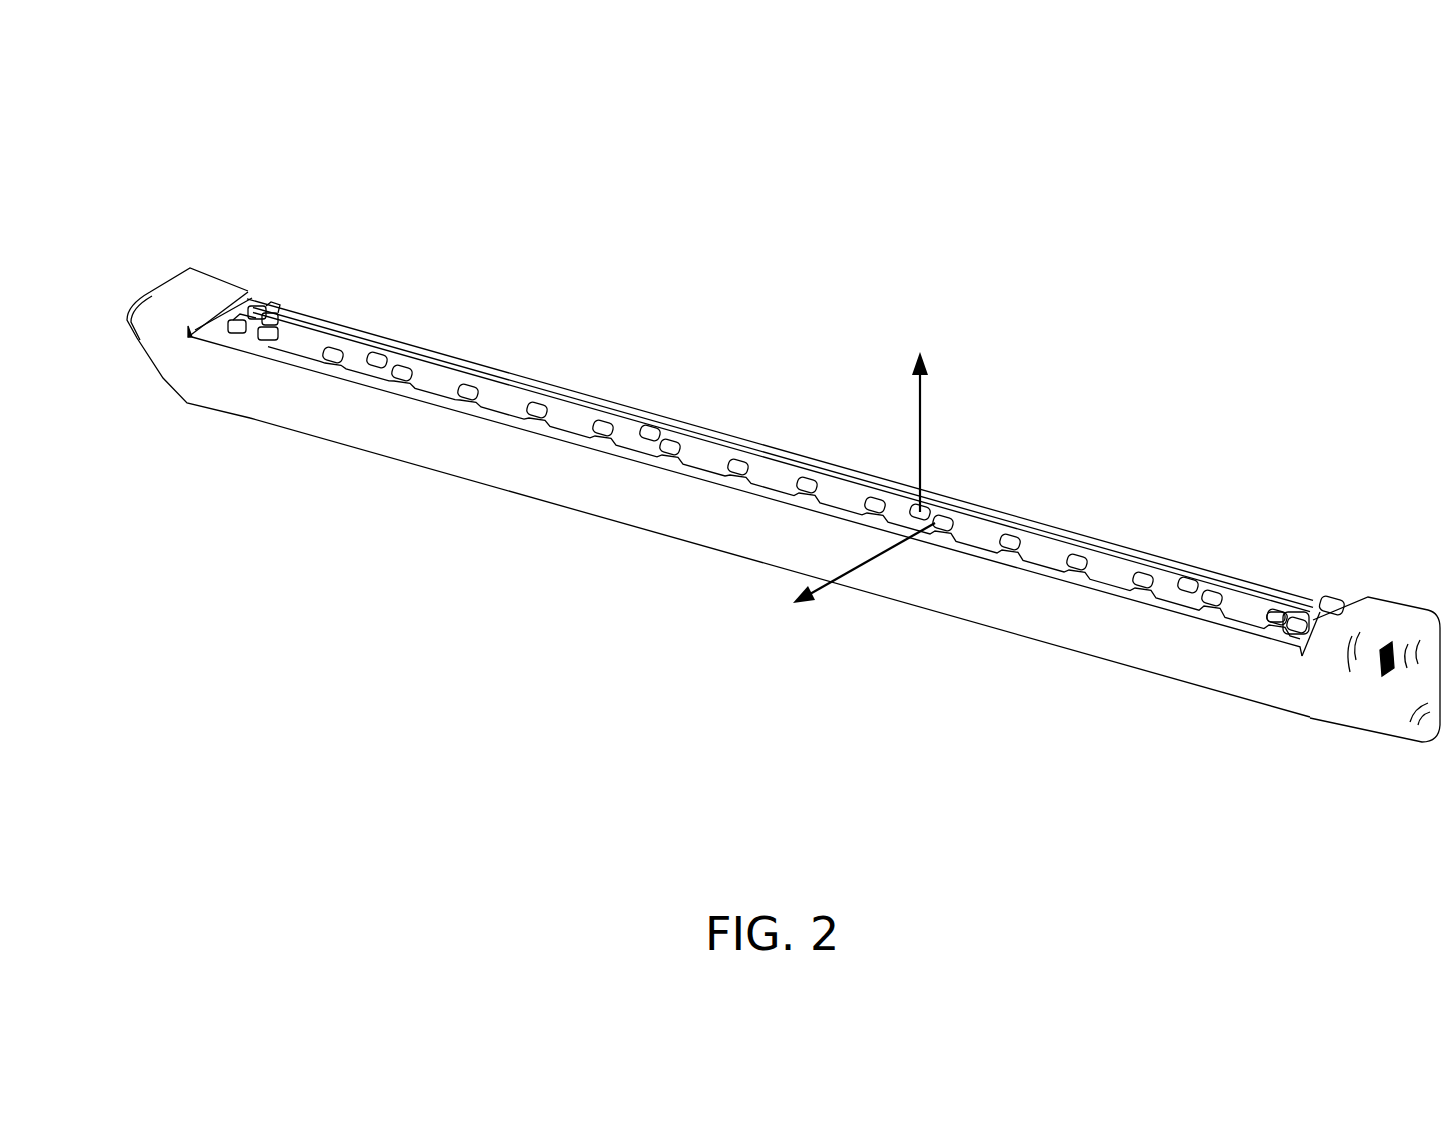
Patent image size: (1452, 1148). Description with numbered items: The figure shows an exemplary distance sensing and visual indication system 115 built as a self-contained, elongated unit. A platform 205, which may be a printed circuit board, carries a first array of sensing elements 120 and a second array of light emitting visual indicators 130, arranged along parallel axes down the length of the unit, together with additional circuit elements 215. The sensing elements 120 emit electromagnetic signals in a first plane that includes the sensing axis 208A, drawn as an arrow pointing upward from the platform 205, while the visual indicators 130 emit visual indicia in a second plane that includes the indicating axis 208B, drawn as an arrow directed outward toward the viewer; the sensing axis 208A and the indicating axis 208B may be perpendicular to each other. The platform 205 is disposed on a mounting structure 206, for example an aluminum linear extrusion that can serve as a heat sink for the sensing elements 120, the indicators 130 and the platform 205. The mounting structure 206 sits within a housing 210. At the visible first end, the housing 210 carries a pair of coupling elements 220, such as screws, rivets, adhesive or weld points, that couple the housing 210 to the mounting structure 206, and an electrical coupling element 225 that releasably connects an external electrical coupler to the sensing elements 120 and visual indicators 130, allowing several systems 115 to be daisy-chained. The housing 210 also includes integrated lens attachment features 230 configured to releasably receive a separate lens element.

The distance sensing and visual indication system 115 is at (229, 120).
The sensing elements 120 is at (373, 357).
The light emitting visual indicators 130 is at (473, 397).
The platform 205 is at (712, 447).
The mounting structure 206 is at (388, 390).
The sensing axis 208A is at (917, 423).
The indicating axis 208B is at (837, 574).
The housing 210 is at (626, 503).
The additional circuit elements 215 is at (1320, 608).
The coupling elements 220 is at (1415, 720).
The electrical coupling element 225 is at (1377, 665).
The lens attachment features 230 is at (253, 297).